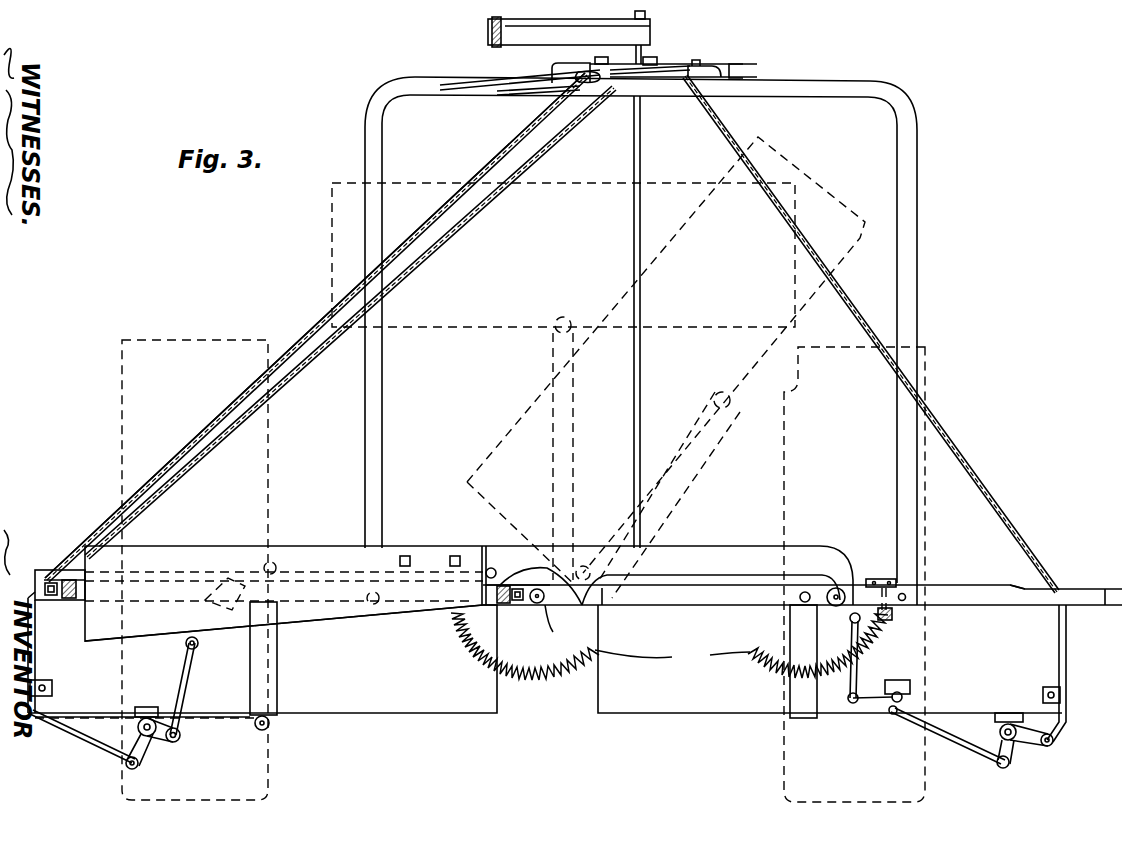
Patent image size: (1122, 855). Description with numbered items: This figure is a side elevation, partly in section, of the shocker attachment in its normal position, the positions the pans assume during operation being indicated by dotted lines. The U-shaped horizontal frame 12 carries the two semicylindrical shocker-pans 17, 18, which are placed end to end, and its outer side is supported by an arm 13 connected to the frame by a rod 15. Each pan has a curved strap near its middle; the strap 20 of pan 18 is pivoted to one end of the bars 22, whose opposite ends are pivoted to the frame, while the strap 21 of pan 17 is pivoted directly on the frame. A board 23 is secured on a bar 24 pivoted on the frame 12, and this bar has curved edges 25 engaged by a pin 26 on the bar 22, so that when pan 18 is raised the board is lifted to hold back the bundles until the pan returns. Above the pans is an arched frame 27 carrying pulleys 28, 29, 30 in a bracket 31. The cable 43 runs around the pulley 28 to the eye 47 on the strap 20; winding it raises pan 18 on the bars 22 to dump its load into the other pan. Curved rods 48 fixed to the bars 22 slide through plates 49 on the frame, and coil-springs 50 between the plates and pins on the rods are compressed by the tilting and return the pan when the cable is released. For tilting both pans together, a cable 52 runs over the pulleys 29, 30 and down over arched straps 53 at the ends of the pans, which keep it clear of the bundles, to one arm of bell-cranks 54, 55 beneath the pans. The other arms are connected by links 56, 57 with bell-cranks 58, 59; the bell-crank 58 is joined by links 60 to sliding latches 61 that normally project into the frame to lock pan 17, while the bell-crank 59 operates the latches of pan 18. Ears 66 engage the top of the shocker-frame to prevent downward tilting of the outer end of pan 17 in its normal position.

The U-shaped horizontal frame 12 is at (1085, 597).
The arm 13 is at (488, 32).
The rod 15 is at (640, 158).
The shocker-pan 17 is at (710, 700).
The shocker-pan 18 is at (420, 700).
The curved strap 20 is at (268, 695).
The curved strap 21 is at (803, 712).
The bar 22 is at (522, 577).
The board 23 is at (300, 557).
The bar 24 is at (695, 565).
The curved edge 25 is at (550, 607).
The pin 26 is at (490, 568).
The arched frame 27 is at (905, 264).
The pulley 28 is at (575, 63).
The pulley 29 is at (660, 66).
The pulley 30 is at (708, 70).
The bracket 31 is at (745, 68).
The cable 43 is at (520, 137).
The eye 47 is at (262, 730).
The curved rod 48 is at (672, 657).
The plate 49 is at (893, 612).
The coil-spring 50 is at (525, 682).
The cable 52 is at (448, 237).
The arched strap 53 is at (36, 628).
The bell-crank 54 is at (1030, 742).
The bell-crank 55 is at (140, 740).
The link 56 is at (955, 746).
The link 57 is at (184, 685).
The bell-crank 58 is at (878, 683).
The bell-crank 59 is at (207, 637).
The link 60 is at (870, 670).
The sliding latch 61 is at (850, 618).
The ear 66 is at (1045, 590).